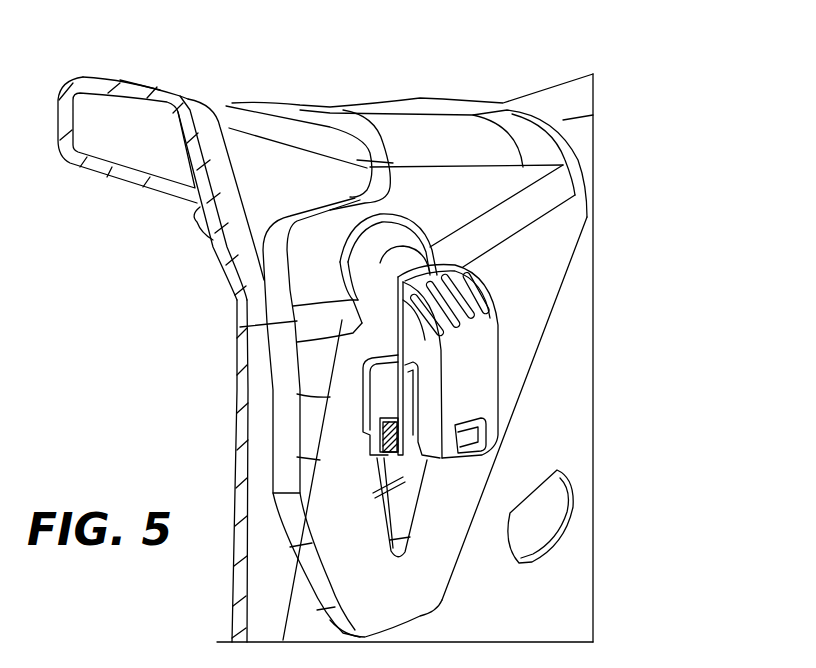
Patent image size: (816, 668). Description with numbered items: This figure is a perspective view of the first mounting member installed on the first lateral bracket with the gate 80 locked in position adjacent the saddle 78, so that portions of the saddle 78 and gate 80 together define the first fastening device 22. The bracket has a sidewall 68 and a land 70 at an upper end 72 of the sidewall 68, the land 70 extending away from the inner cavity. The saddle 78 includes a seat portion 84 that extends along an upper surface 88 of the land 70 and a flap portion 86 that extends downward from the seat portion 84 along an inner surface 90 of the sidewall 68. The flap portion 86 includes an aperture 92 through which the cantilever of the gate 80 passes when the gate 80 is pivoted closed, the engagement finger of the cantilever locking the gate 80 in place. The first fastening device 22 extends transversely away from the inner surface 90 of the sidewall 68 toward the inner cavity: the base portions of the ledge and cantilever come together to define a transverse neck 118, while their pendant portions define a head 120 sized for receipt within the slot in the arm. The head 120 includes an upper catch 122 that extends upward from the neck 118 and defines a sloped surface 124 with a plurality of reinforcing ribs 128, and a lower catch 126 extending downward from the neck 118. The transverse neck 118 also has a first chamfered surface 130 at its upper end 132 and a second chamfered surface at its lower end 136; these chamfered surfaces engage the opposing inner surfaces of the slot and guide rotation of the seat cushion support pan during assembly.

The first fastening device 22 is at (508, 340).
The sidewall 68 is at (231, 594).
The land 70 is at (210, 103).
The upper end 72 is at (157, 85).
The saddle 78 is at (575, 253).
The gate 80 is at (197, 221).
The seat portion 84 is at (444, 111).
The flap portion 86 is at (437, 611).
The upper surface 88 is at (103, 76).
The inner surface 90 is at (577, 443).
The aperture 92 is at (381, 530).
The transverse neck 118 is at (390, 357).
The head 120 is at (493, 428).
The upper catch 122 is at (453, 262).
The sloped surface 124 is at (465, 338).
The lower catch 126 is at (413, 462).
The reinforcing ribs 128 is at (456, 298).
The first chamfered surface 130 is at (397, 313).
The upper end 132 is at (397, 297).
The lower end 136 is at (392, 450).